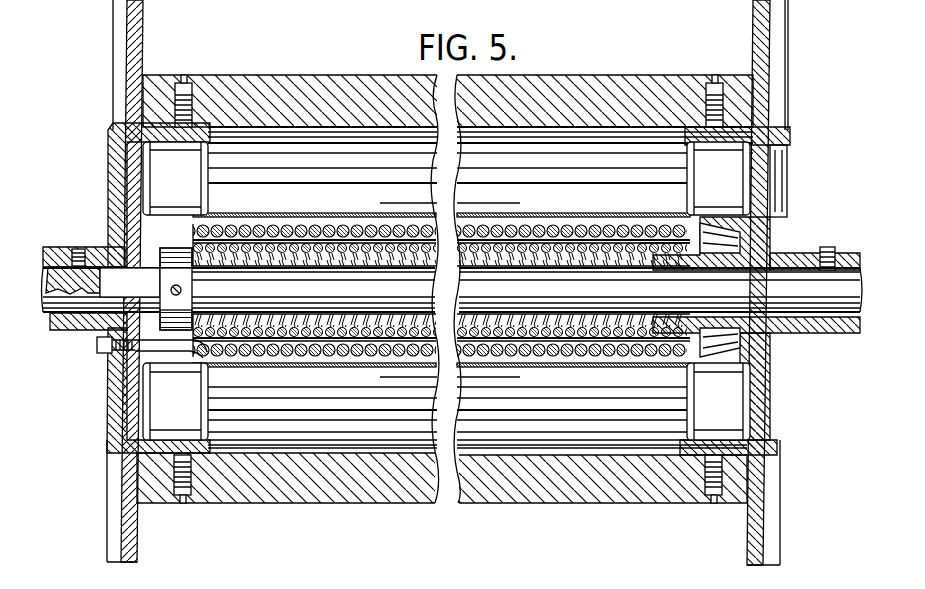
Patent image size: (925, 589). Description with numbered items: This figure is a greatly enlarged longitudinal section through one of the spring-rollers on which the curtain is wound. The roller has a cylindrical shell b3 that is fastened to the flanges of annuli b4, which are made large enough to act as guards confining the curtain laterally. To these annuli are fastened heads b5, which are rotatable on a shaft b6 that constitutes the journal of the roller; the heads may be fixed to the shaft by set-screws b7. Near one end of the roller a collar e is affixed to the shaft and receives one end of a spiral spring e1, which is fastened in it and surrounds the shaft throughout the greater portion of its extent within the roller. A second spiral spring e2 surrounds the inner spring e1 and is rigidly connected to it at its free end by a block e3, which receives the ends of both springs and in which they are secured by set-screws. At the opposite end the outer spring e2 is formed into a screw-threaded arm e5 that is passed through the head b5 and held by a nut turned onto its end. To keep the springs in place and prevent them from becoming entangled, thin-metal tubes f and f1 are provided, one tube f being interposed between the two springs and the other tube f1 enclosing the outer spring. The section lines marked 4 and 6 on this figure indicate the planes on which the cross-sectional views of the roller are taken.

The cylindrical shell b3 is at (618, 88).
The annuli b4 is at (137, 42).
The heads b5 is at (108, 228).
The shaft b6 is at (452, 290).
The set-screws b7 is at (55, 257).
The collar e is at (170, 277).
The spiral spring e1 is at (191, 289).
The second spiral spring e2 is at (474, 222).
The block e3 is at (702, 232).
The arm e5 is at (204, 366).
The tube f is at (648, 227).
The tube f1 is at (561, 362).
The end cup (left) 4 is at (203, 194).
The end cup (right) 6 is at (700, 188).